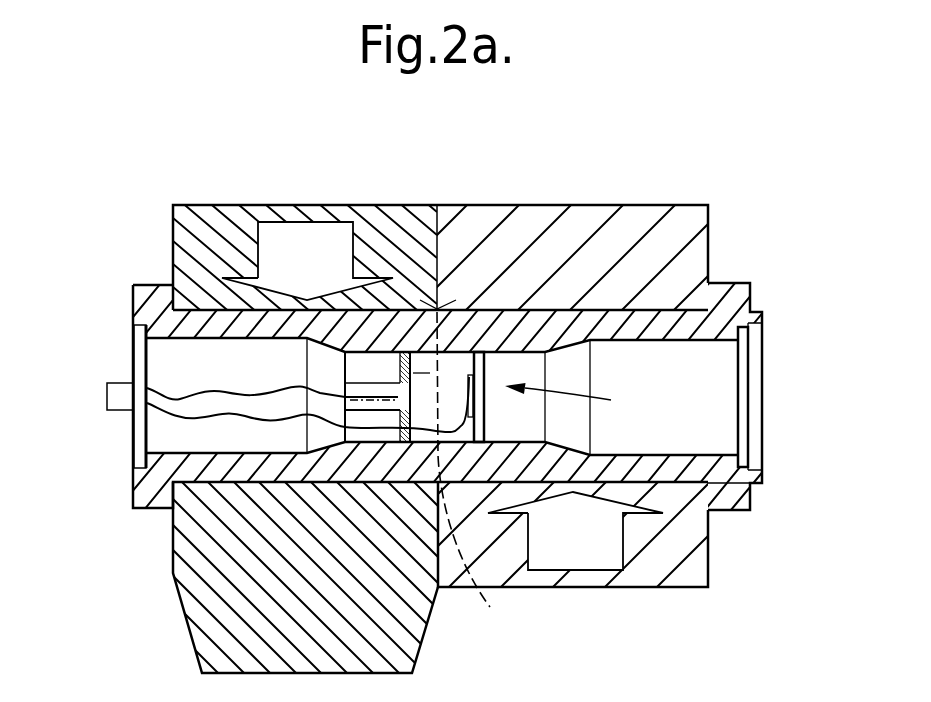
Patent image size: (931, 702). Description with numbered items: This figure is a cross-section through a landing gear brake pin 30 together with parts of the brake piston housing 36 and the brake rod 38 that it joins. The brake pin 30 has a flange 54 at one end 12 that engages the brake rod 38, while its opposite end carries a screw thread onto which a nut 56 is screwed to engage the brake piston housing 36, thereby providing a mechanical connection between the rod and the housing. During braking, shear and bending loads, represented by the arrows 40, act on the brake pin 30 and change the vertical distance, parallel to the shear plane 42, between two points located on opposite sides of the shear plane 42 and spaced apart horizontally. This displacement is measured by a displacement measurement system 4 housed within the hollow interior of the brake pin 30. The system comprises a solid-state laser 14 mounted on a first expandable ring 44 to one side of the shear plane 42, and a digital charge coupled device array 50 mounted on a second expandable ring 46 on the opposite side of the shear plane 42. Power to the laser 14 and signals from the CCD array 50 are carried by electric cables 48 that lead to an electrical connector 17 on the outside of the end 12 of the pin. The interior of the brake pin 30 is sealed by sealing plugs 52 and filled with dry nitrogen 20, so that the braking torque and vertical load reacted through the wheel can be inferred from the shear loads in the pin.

The displacement measurement system 4 is at (568, 400).
The end of the brake pin 12 is at (125, 346).
The solid-state laser 14 is at (377, 393).
The electrical connector 17 is at (117, 395).
The dry nitrogen 20 is at (706, 403).
The brake pin 30 is at (712, 317).
The brake piston housing 36 is at (643, 222).
The brake rod 38 is at (200, 232).
The arrows 40 is at (327, 269).
The shear plane 42 is at (481, 476).
The first expandable ring 44 is at (413, 373).
The second expandable ring 46 is at (490, 374).
The electric cables 48 is at (241, 385).
The digital charge coupled device (CCD) array 50 is at (473, 405).
The sealing plugs 52 is at (137, 448).
The flange 54 is at (158, 490).
The nut 56 is at (732, 500).